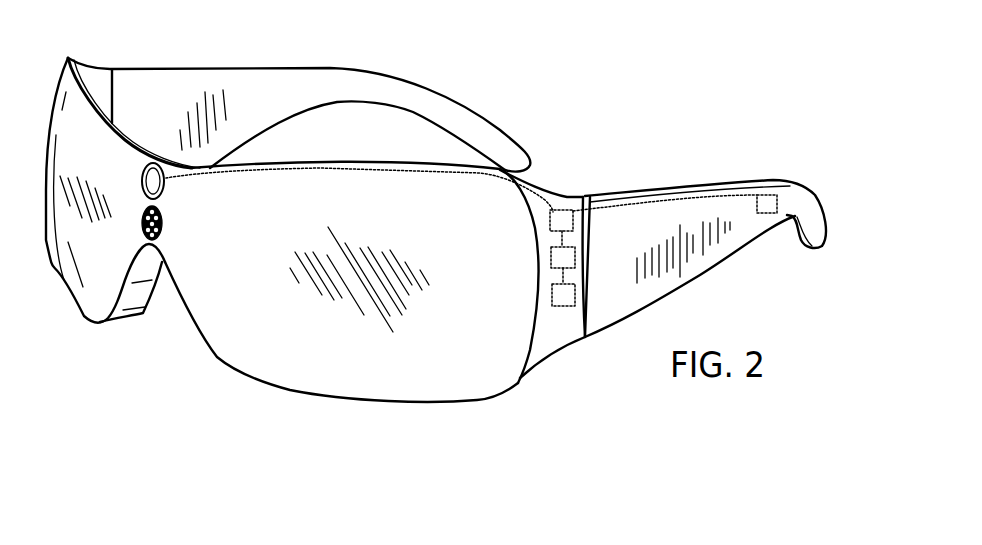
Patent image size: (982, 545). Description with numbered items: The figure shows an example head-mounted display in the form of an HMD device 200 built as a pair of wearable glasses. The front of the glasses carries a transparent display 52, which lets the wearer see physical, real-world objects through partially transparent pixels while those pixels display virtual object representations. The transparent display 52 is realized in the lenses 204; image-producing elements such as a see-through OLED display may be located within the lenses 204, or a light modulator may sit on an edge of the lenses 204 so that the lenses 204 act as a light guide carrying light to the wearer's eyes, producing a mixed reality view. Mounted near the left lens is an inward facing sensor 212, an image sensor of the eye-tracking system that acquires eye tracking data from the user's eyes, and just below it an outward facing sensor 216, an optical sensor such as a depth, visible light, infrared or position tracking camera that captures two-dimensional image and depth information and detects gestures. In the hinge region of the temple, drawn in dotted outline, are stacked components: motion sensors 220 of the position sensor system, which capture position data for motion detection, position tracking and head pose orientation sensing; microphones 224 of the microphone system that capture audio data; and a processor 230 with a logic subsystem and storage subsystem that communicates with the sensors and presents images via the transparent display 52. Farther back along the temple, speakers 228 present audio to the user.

The transparent display 52 is at (245, 340).
The HMD device 200 is at (86, 361).
The lenses 204 is at (93, 297).
The inward facing sensor 212 is at (166, 178).
The outward facing sensor 216 is at (162, 222).
The motion sensors 220 is at (566, 210).
The microphones 224 is at (576, 247).
The speakers 228 is at (765, 195).
The processor 230 is at (576, 285).